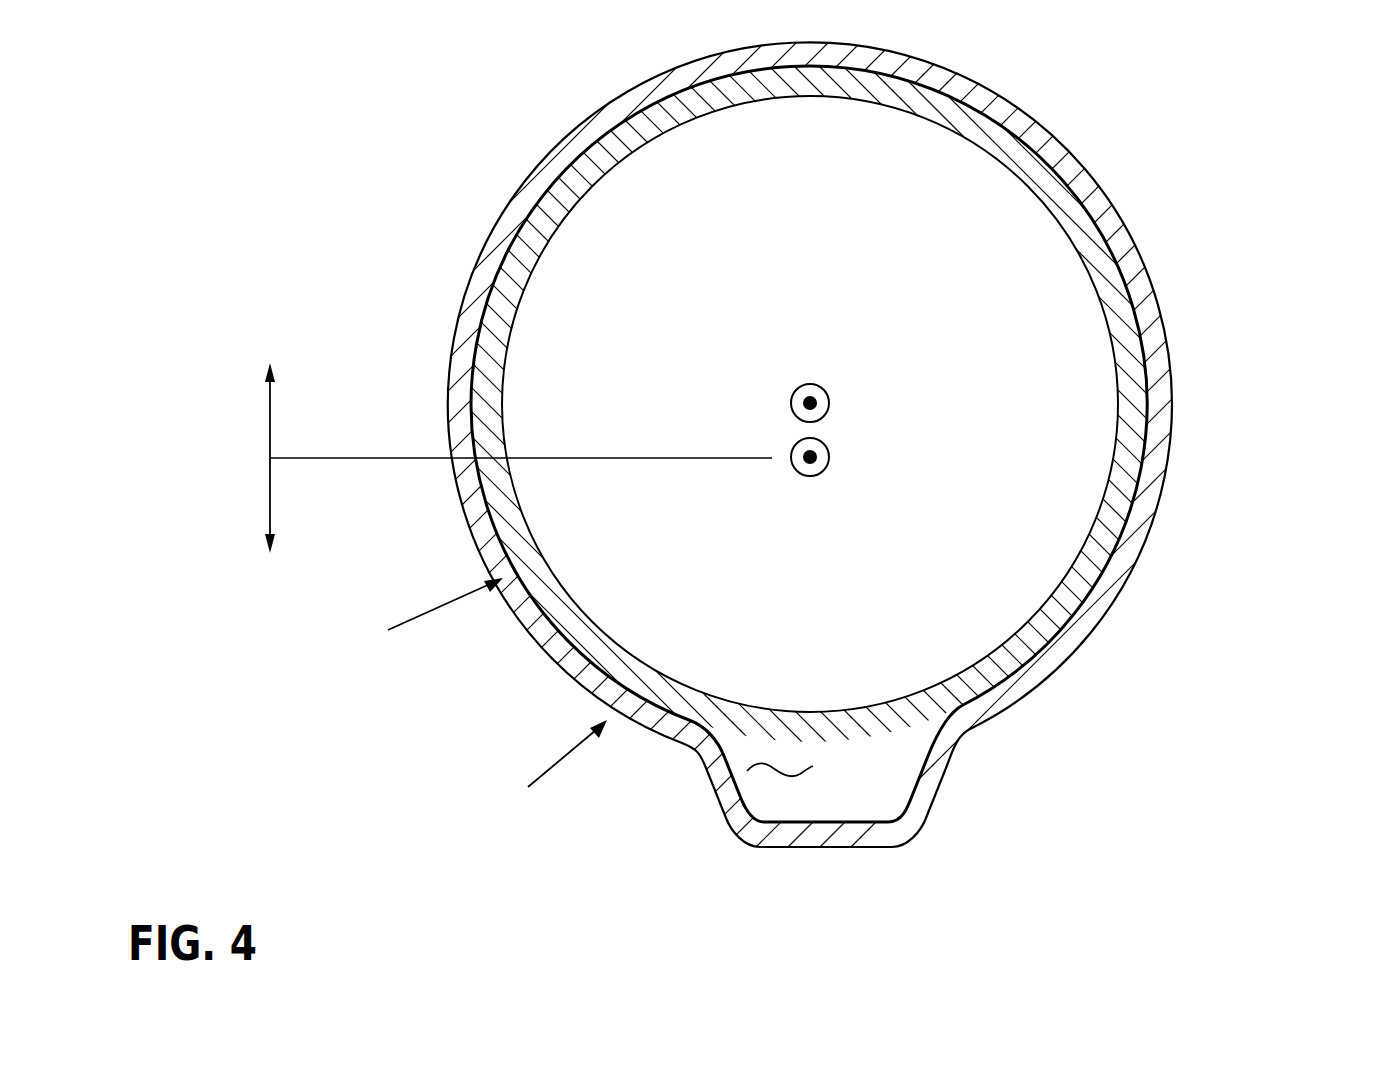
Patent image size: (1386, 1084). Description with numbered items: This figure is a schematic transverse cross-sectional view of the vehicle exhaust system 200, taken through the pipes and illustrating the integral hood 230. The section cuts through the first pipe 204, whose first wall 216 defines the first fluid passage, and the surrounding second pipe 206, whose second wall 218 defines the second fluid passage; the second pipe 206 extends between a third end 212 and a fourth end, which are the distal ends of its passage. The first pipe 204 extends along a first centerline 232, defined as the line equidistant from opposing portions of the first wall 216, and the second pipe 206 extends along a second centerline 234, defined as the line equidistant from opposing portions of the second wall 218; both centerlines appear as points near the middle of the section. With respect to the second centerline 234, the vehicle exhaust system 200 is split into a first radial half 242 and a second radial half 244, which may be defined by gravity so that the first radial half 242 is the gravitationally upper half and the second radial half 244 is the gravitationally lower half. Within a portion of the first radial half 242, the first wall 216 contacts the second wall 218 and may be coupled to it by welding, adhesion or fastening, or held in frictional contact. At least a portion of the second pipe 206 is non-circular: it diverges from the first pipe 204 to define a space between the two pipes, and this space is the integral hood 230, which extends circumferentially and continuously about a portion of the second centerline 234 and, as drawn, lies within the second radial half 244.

The vehicle exhaust system 200 is at (345, 76).
The first pipe 204 is at (421, 616).
The second pipe 206 is at (544, 767).
The third end 212 is at (1065, 672).
The first wall 216 is at (1125, 545).
The second wall 218 is at (1152, 285).
The integral hood 230 is at (775, 775).
The first centerline 232 is at (828, 393).
The second centerline 234 is at (830, 462).
The first radial half 242 is at (268, 410).
The second radial half 244 is at (268, 502).